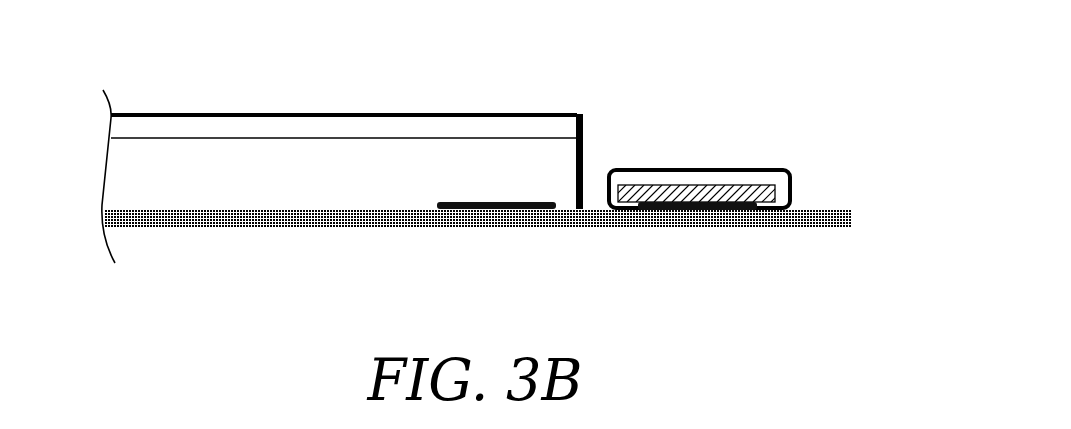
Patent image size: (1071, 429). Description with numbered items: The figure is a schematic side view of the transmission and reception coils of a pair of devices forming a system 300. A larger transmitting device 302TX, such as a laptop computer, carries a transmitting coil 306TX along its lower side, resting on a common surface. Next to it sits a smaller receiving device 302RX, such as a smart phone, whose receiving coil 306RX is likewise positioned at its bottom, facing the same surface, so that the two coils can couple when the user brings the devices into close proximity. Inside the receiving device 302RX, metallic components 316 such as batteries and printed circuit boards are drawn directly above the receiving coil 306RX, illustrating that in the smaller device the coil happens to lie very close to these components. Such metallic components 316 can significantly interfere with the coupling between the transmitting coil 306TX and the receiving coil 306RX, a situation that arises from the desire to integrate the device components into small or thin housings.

The system 300 is at (751, 51).
The transmitting device 302TX is at (287, 114).
The transmitting coil 306TX is at (437, 234).
The receiving device 302RX is at (697, 168).
The metallic components 316 is at (638, 182).
The receiving coil 306RX is at (676, 235).